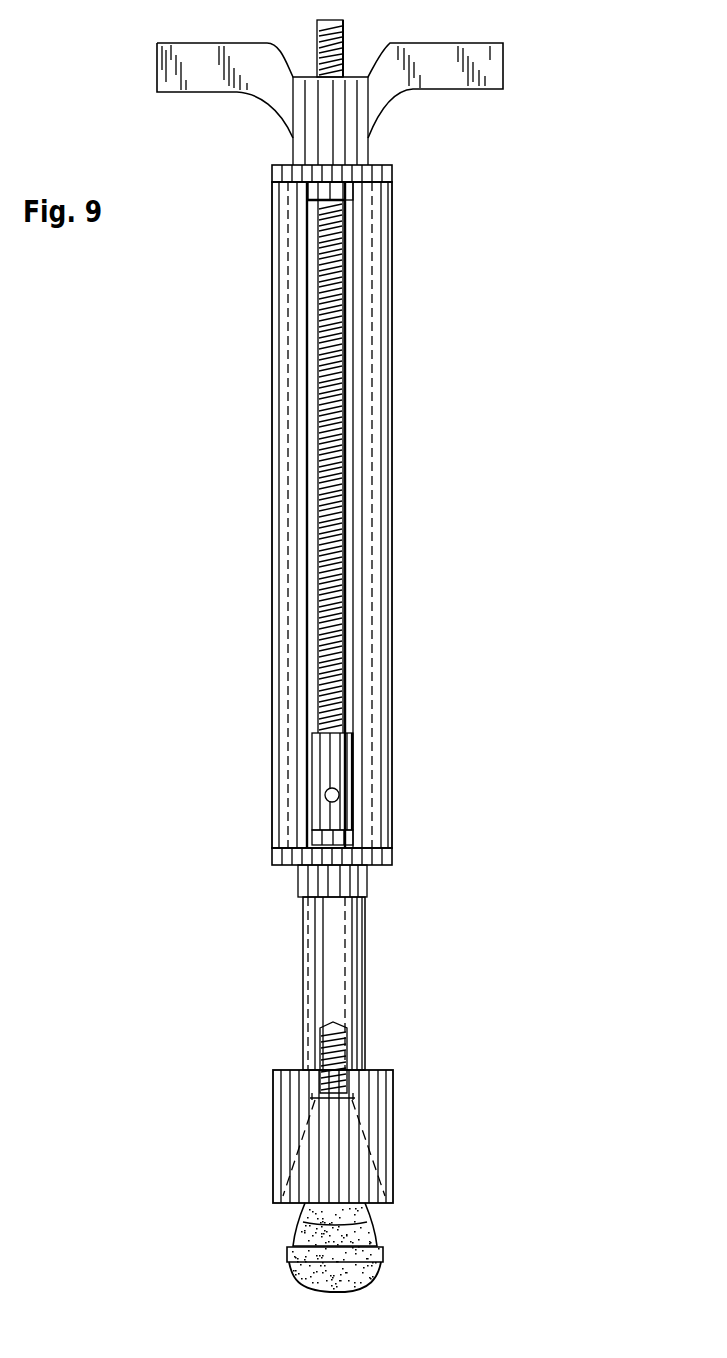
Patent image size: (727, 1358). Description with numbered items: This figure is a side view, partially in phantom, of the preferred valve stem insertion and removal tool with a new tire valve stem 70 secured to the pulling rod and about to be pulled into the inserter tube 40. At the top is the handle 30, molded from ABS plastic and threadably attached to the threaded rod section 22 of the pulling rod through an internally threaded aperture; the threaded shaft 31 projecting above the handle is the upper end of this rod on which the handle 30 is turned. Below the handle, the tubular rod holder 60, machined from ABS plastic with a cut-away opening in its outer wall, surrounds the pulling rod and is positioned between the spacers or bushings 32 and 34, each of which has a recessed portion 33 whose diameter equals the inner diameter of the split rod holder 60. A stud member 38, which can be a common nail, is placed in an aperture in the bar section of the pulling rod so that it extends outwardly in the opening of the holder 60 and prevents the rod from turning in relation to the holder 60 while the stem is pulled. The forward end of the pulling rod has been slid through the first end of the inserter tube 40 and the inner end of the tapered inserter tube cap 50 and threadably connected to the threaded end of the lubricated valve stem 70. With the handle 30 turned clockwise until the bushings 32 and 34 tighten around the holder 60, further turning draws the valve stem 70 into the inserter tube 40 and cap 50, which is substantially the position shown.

The threaded rod section 22 is at (343, 363).
The handle 30 is at (497, 68).
The threaded shaft of handle 31 is at (344, 31).
The spacer or bushing 32 is at (273, 175).
The recessed portion 33 is at (343, 188).
The spacer or bushing 34 is at (387, 867).
The stud member 38 is at (340, 795).
The inserter tube 40 is at (305, 965).
The tapered inserter tube cap 50 is at (395, 1138).
The rod holder 60 is at (278, 384).
The tire valve stem 70 is at (285, 1255).